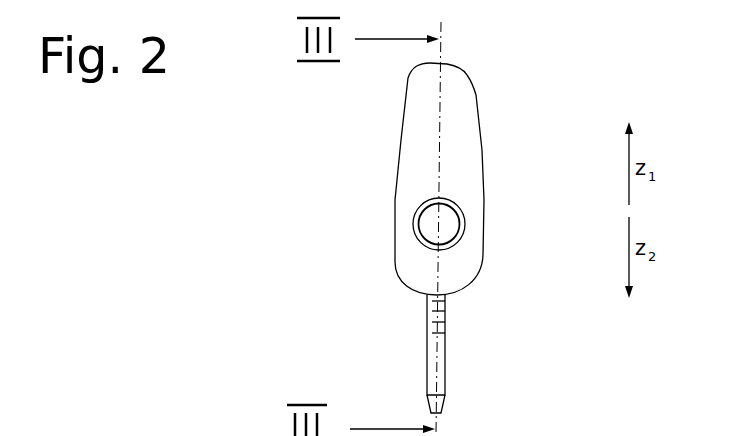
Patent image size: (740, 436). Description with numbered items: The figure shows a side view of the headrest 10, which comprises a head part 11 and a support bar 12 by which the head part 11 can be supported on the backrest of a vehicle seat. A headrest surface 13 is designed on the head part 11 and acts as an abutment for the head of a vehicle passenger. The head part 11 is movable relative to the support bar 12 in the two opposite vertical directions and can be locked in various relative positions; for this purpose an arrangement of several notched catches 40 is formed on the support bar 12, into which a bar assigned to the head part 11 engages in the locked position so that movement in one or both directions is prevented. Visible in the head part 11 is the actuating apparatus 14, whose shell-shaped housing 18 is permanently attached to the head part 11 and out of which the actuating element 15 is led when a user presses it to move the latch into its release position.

The headrest 10 is at (478, 206).
The head part 11 is at (476, 155).
The support bars 12 is at (428, 342).
The headrest surface 13 is at (401, 140).
The actuating apparatus 14 is at (484, 228).
The actuating element 15 is at (444, 231).
The housing 18 is at (396, 219).
The notched catches 40 is at (450, 342).